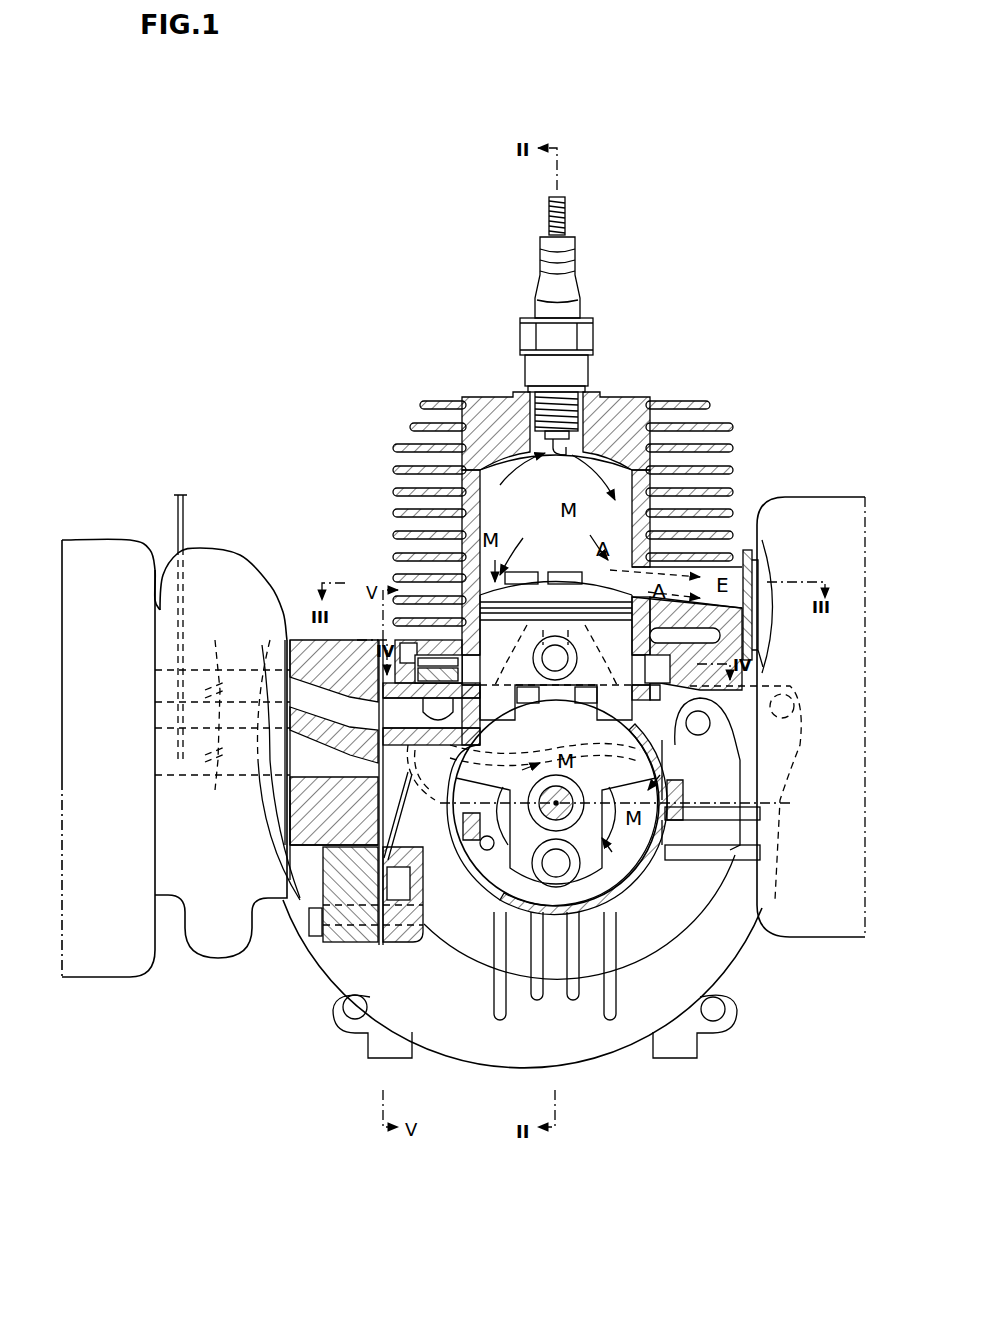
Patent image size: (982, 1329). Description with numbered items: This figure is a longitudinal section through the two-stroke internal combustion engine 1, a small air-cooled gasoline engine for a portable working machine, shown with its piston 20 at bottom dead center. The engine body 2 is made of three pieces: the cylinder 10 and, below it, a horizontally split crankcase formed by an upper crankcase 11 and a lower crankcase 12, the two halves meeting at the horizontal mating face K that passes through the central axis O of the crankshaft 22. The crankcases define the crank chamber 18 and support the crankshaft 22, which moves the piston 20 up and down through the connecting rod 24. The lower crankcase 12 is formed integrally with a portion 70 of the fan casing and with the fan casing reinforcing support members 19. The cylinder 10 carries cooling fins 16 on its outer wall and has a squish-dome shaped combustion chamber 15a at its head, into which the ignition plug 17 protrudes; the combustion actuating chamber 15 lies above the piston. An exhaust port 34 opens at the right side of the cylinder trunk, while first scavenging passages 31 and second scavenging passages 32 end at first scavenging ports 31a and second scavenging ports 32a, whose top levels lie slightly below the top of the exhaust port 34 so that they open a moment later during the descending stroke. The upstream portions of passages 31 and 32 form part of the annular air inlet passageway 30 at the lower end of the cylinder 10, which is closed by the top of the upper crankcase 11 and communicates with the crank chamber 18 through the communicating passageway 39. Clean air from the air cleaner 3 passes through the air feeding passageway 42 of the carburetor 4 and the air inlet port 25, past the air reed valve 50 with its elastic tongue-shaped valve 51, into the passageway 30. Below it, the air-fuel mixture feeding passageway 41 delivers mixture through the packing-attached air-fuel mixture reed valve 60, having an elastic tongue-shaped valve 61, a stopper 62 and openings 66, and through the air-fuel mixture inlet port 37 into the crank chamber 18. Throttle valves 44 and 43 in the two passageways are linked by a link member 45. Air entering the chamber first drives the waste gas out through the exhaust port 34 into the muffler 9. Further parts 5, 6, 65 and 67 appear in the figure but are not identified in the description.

The two-stroke internal combustion engine 1 is at (260, 308).
The engine body 2 is at (390, 470).
The air cleaner 3 is at (98, 537).
The carburetor 4 is at (228, 560).
The crankcase 5 is at (330, 905).
The crankcase joint 6 is at (300, 832).
The muffler 9 is at (815, 495).
The cylinder 10 is at (628, 392).
The upper crankcase 11 is at (682, 778).
The lower crankcase 12 is at (662, 878).
The combustion actuating chamber 15 is at (458, 500).
The combustion chamber 15a is at (528, 408).
The cooling fins 16 is at (720, 425).
The ignition plug 17 is at (655, 440).
The crank chamber 18 is at (620, 870).
The fan casing reinforcing support members 19 is at (537, 1000).
The piston 20 is at (760, 650).
The crankshaft 22 is at (583, 808).
The connecting rod 24 is at (628, 698).
The air inlet port 25 is at (458, 712).
The annular air inlet passageway 30 is at (400, 640).
The first scavenging passages 31 is at (511, 699).
The second scavenging passages 32 is at (600, 699).
The first scavenging ports 31a is at (530, 572).
The second scavenging ports 32a is at (560, 572).
The exhaust port 34 is at (752, 625).
The air-fuel mixture inlet port 37 is at (438, 850).
The communicating passageway 39 is at (706, 723).
The air-fuel mixture feeding passageway 41 is at (265, 795).
The air feeding passageway 42 is at (270, 643).
The throttle valve 43 is at (202, 786).
The throttle valve 44 is at (218, 680).
The link member 45 is at (177, 520).
The air reed valve 50 is at (428, 655).
The elastic tongue-shaped valve 51 is at (482, 660).
The packing-attached air-fuel mixture reed valve 60 is at (382, 950).
The elastic tongue-shaped valve 61 is at (524, 806).
The stopper 62 is at (404, 800).
The bolt 65 is at (400, 935).
The openings 66 is at (360, 942).
The carburetor mounting flange 67 is at (322, 655).
The portion of the fan casing 70 is at (598, 1020).
The mating face K is at (712, 800).
The central axis of the crankshaft O is at (552, 806).